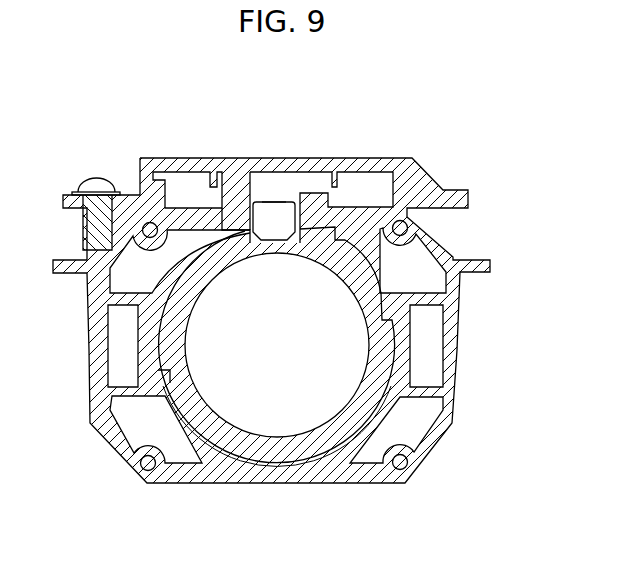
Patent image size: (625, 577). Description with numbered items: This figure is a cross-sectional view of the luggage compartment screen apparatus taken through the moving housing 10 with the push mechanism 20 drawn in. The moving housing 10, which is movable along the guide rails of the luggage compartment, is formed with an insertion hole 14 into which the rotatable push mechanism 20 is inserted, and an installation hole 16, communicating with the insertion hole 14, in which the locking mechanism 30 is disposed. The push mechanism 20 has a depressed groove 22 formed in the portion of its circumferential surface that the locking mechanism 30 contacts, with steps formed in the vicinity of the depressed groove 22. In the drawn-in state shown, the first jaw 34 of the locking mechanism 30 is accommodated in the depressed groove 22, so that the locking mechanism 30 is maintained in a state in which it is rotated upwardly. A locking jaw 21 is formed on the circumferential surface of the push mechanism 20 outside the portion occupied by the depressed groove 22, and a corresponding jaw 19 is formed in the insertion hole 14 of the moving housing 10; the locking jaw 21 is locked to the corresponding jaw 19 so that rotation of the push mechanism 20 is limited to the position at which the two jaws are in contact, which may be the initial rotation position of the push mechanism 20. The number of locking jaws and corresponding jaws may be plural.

The moving housing 10 is at (182, 157).
The insertion hole 14 is at (355, 269).
The installation hole 16 is at (300, 203).
The corresponding jaw 19 is at (140, 375).
The push mechanism 20 is at (318, 463).
The locking jaw 21 is at (390, 312).
The depressed groove 22 is at (335, 193).
The locking mechanism 30 is at (258, 190).
The first jaw 34 is at (276, 208).